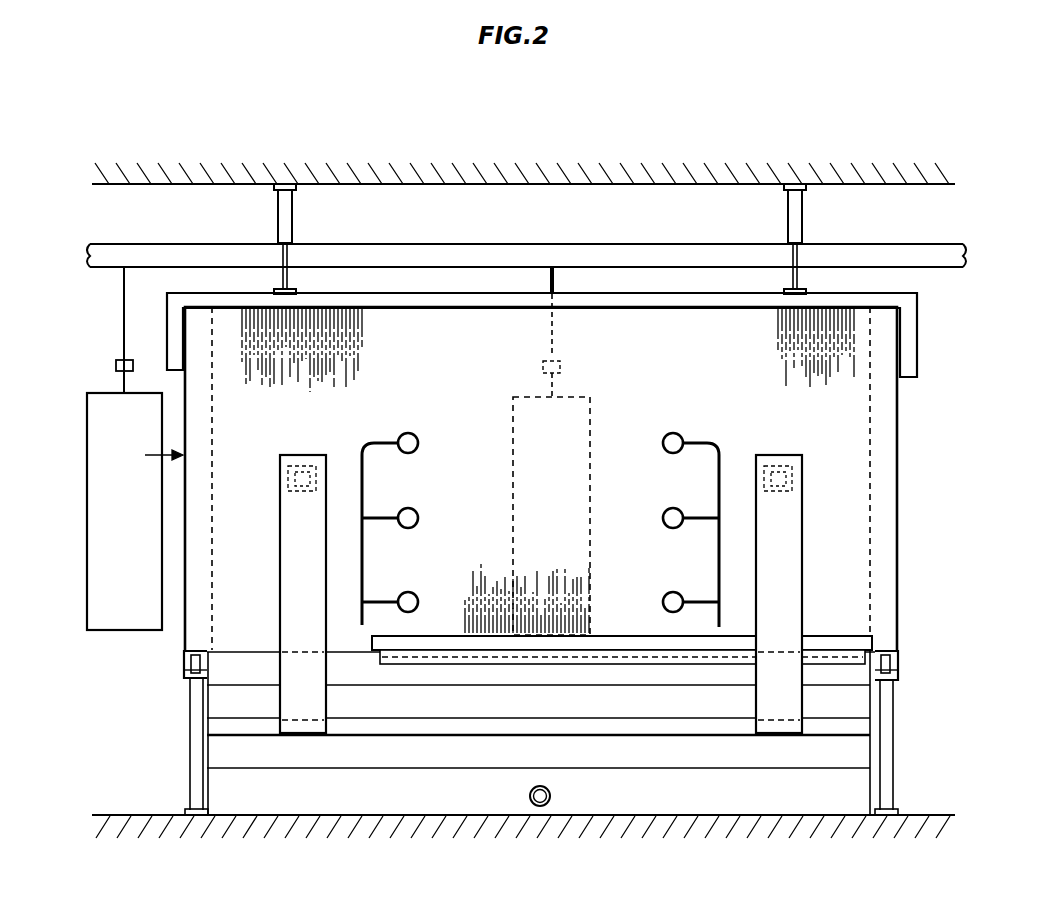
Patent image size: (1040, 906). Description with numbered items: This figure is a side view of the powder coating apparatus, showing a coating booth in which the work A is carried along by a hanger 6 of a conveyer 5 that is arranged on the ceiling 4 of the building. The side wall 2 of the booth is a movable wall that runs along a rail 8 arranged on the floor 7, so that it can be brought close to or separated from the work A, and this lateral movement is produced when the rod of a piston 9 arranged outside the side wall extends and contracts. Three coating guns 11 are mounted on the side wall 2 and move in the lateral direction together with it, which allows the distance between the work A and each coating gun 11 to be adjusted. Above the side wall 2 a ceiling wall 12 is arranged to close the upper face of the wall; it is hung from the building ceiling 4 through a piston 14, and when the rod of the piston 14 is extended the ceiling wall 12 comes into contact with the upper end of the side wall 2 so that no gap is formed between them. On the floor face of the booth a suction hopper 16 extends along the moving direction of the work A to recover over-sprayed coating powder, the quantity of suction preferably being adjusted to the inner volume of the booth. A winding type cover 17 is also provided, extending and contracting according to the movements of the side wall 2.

The side wall 2 is at (437, 342).
The ceiling 4 is at (885, 190).
The conveyer 5 is at (115, 249).
The hanger 6 is at (122, 312).
The floor 7 is at (125, 812).
The rail 8 is at (195, 680).
The piston 9 is at (282, 470).
The coating gun 11 is at (416, 436).
The ceiling wall 12 is at (383, 297).
The piston 14 is at (285, 218).
The suction hopper 16 is at (380, 700).
The winding type cover 17 is at (460, 655).
The work A is at (105, 430).